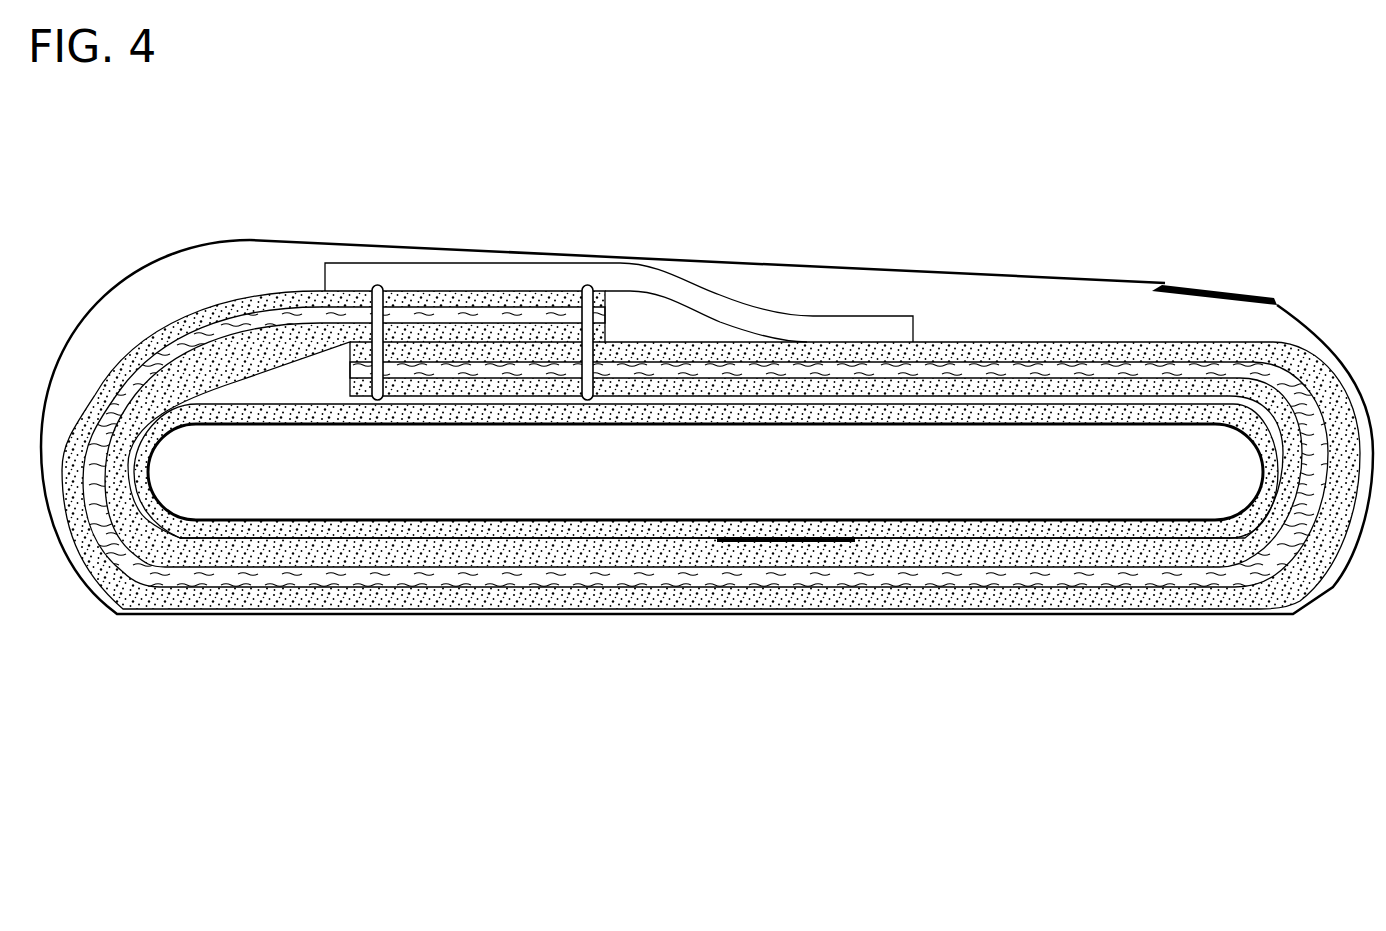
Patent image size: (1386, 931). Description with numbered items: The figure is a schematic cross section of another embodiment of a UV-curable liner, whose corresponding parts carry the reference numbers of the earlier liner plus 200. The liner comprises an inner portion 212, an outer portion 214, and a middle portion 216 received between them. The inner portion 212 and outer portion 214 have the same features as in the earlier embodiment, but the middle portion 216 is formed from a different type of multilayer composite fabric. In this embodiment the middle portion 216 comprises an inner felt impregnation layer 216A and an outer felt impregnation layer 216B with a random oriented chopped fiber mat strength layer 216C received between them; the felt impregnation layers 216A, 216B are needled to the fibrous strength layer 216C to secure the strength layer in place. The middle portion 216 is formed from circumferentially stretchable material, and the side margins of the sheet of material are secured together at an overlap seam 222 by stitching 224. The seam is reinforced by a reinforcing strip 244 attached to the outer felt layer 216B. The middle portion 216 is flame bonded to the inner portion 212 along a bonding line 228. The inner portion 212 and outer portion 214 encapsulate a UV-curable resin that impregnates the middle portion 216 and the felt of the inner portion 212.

The reference number offset 200 is at (151, 764).
The inner portion 212 is at (1060, 425).
The outer portion 214 is at (981, 283).
The middle portion 216 is at (838, 398).
The inner felt impregnation layer 216A is at (485, 593).
The outer felt impregnation layer 216B is at (420, 557).
The random oriented chopped fiber mat strength layer 216C is at (663, 580).
The overlap seam 222 is at (487, 340).
The stitching 224 is at (585, 298).
The bonding line 228 is at (797, 542).
The reinforcing strip 244 is at (737, 293).